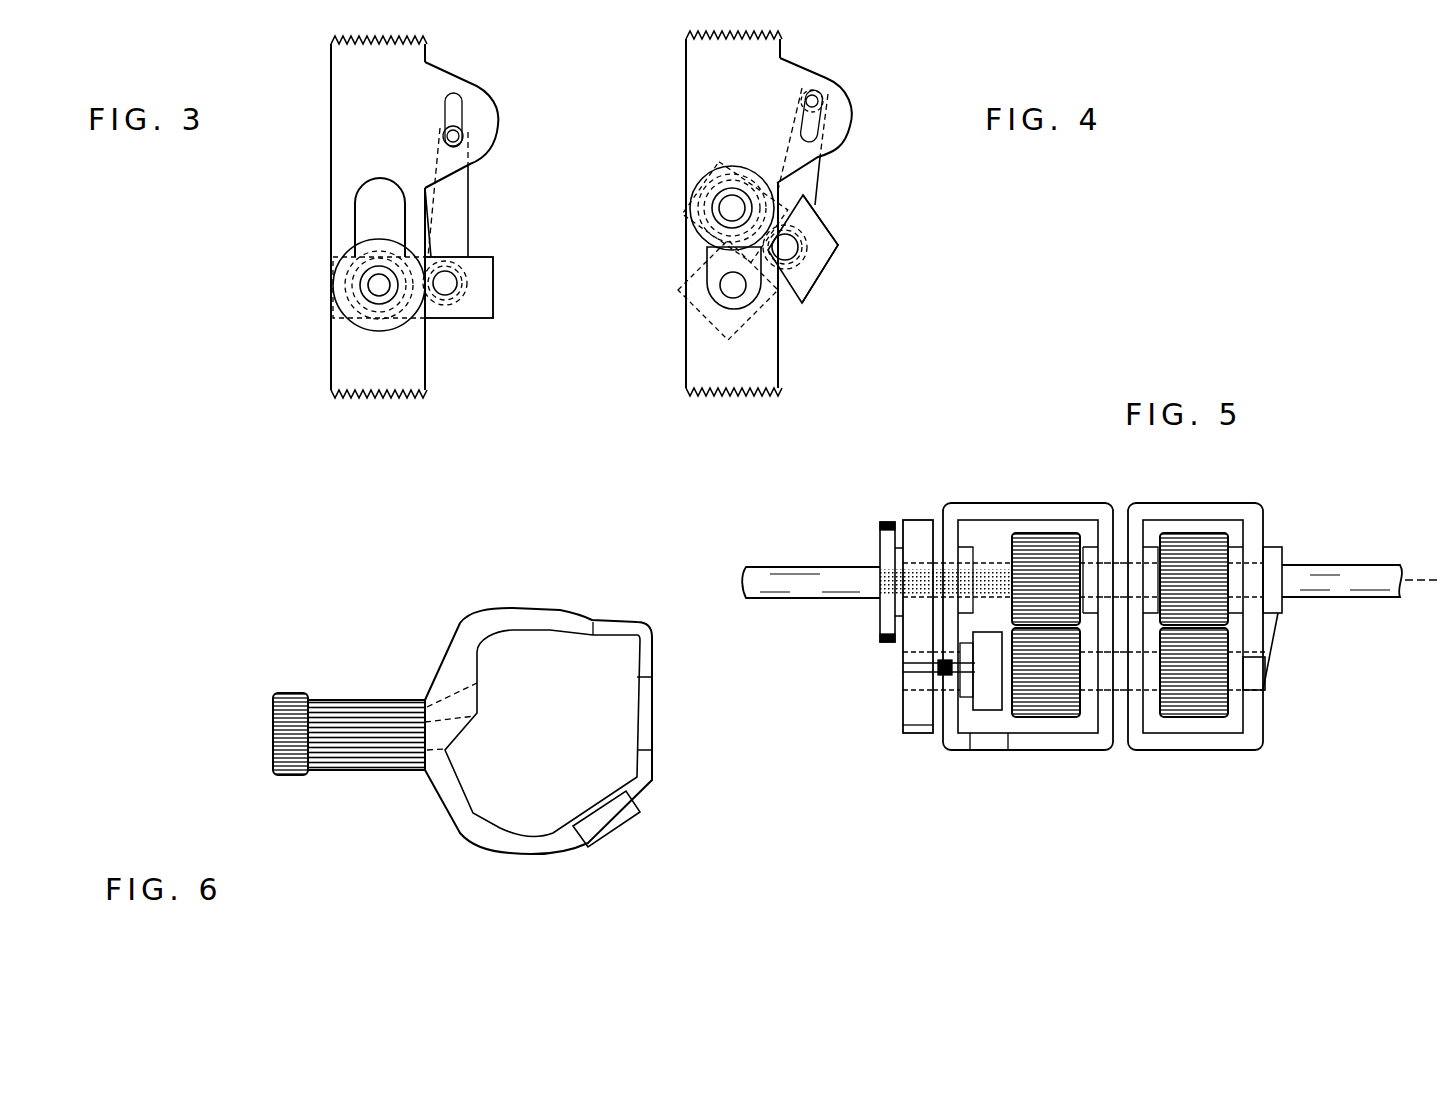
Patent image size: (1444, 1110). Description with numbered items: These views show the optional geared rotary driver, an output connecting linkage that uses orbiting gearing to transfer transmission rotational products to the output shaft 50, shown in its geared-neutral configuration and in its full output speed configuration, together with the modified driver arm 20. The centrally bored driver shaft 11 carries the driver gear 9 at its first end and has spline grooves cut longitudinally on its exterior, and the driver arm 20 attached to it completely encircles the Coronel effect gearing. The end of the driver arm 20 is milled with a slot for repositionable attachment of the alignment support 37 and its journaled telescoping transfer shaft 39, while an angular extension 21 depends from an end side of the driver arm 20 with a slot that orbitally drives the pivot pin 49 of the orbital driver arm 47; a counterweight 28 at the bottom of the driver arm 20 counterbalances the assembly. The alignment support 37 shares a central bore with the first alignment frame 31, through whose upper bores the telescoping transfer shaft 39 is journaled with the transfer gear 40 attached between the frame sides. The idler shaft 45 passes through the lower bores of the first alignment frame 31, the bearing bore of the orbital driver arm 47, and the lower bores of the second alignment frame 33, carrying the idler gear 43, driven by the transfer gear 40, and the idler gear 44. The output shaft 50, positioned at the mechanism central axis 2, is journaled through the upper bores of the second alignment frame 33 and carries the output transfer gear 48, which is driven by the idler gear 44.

In FIG. 5, the mechanism central axis 2 is at (1408, 581).
In FIG. 6, the driver gear 9 is at (290, 776).
In FIG. 6, the driver shaft 11 is at (363, 771).
In FIG. 3, the driver arm 20 is at (372, 396).
In FIG. 4, the driver arm 20 is at (728, 396).
In FIG. 5, the driver arm 20 is at (918, 520).
In FIG. 6, the driver arm 20 is at (462, 623).
In FIG. 3, the angular extension 21 is at (478, 83).
In FIG. 4, the angular extension 21 is at (822, 80).
In FIG. 5, the angular extension 21 is at (903, 733).
In FIG. 6, the angular extension 21 is at (645, 677).
In FIG. 6, the counterweight 28 is at (612, 838).
In FIG. 3, the first alignment frame 31 is at (493, 300).
In FIG. 4, the first alignment frame 31 is at (832, 228).
In FIG. 5, the first alignment frame 31 is at (975, 503).
In FIG. 3, the second alignment frame 33 is at (459, 287).
In FIG. 4, the second alignment frame 33 is at (821, 278).
In FIG. 5, the second alignment frame 33 is at (1232, 503).
In FIG. 3, the alignment support 37 is at (352, 318).
In FIG. 4, the alignment support 37 is at (692, 235).
In FIG. 5, the alignment support 37 is at (880, 524).
In FIG. 3, the telescoping transfer shaft 39 is at (379, 285).
In FIG. 4, the telescoping transfer shaft 39 is at (722, 200).
In FIG. 5, the telescoping transfer shaft 39 is at (785, 567).
In FIG. 3, the transfer gear 40 is at (358, 272).
In FIG. 4, the transfer gear 40 is at (712, 220).
In FIG. 5, the transfer gear 40 is at (1045, 533).
In FIG. 3, the idler gear 43 is at (445, 304).
In FIG. 4, the idler gear 43 is at (838, 245).
In FIG. 5, the idler gear 43 is at (1045, 717).
In FIG. 3, the idler gear 44 is at (445, 283).
In FIG. 4, the idler gear 44 is at (785, 247).
In FIG. 5, the idler gear 44 is at (1193, 717).
In FIG. 3, the idler shaft 45 is at (445, 283).
In FIG. 4, the idler shaft 45 is at (788, 292).
In FIG. 5, the idler shaft 45 is at (1265, 675).
In FIG. 3, the orbital driver arm 47 is at (468, 210).
In FIG. 4, the orbital driver arm 47 is at (818, 185).
In FIG. 5, the orbital driver arm 47 is at (988, 710).
In FIG. 3, the output transfer gear 48 is at (379, 285).
In FIG. 4, the output transfer gear 48 is at (706, 285).
In FIG. 5, the output transfer gear 48 is at (1195, 533).
In FIG. 3, the pivot pin 49 is at (458, 132).
In FIG. 4, the pivot pin 49 is at (818, 100).
In FIG. 5, the pivot pin 49 is at (903, 668).
In FIG. 4, the output shaft 50 is at (725, 300).
In FIG. 5, the output shaft 50 is at (1340, 565).